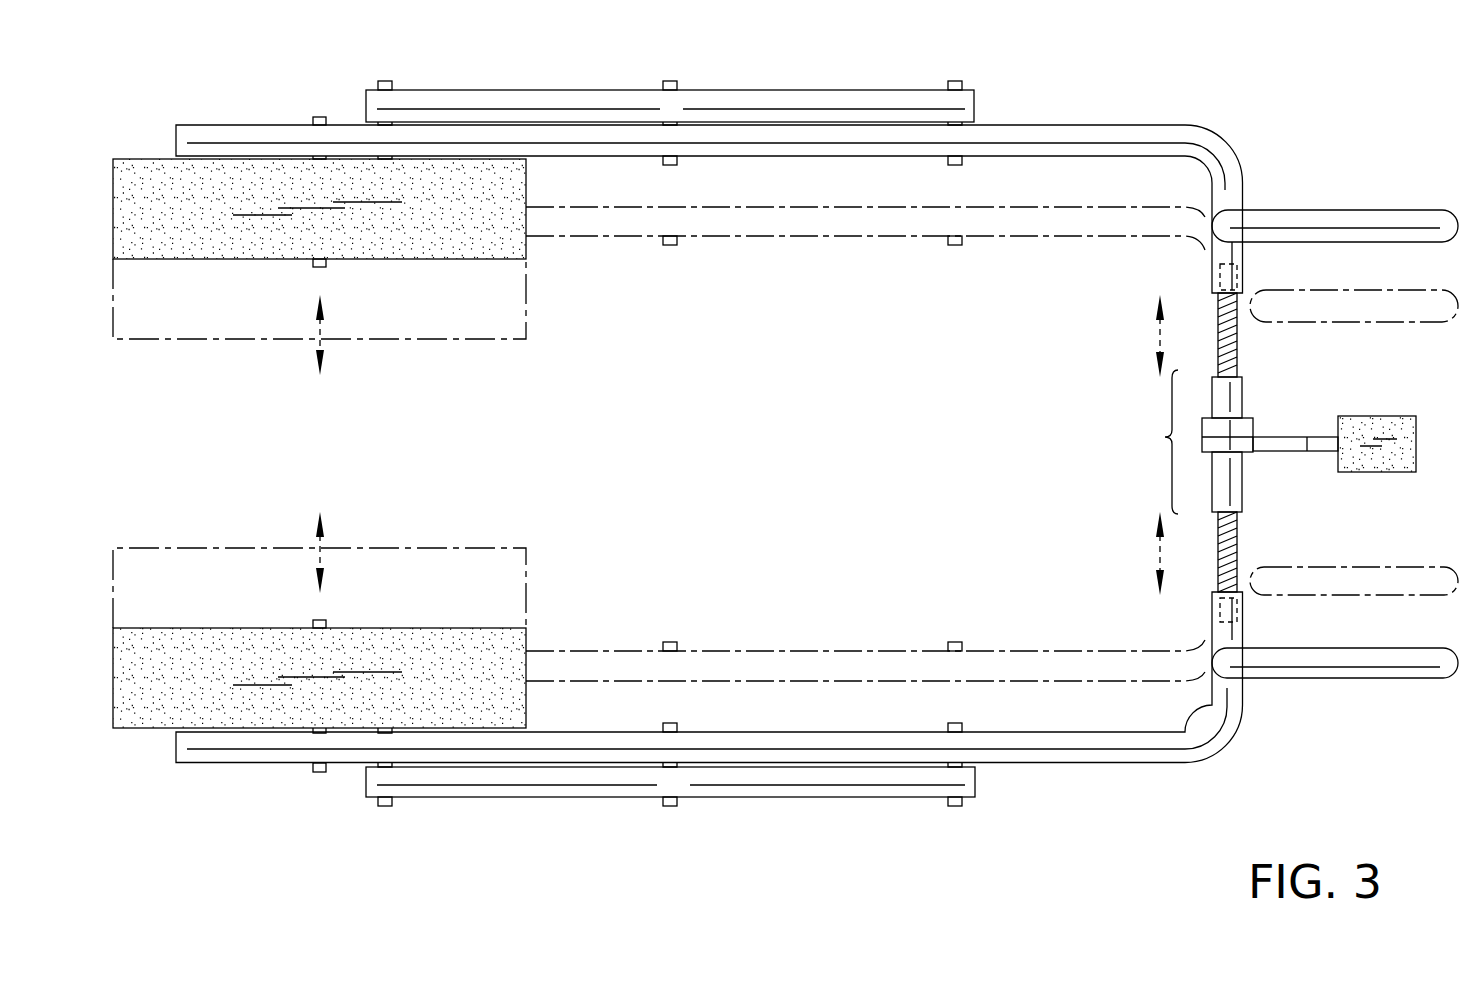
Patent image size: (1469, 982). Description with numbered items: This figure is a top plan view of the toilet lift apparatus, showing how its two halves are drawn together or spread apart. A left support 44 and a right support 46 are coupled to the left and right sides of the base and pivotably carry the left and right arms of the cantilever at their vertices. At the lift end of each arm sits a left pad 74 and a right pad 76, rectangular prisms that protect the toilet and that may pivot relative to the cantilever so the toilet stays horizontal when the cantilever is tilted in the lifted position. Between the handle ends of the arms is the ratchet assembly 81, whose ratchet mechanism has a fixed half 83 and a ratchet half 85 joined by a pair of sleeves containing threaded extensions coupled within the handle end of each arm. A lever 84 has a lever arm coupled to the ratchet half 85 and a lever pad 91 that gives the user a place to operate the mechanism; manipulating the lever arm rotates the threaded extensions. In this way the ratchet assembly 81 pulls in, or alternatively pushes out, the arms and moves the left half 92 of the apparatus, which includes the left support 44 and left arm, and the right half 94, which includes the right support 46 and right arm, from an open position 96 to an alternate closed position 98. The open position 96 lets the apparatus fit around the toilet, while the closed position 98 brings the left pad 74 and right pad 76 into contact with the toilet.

The left support 44 is at (787, 780).
The right support 46 is at (800, 103).
The left pad 74 is at (500, 665).
The right pad 76 is at (500, 223).
The ratchet assembly 81 is at (1219, 442).
The fixed half 83 is at (1247, 425).
The lever 84 is at (1295, 445).
The ratchet half 85 is at (1221, 510).
The lever pad 91 is at (1383, 433).
The left half 92 is at (1238, 758).
The right half 94 is at (1256, 136).
The open position 96 is at (747, 718).
The closed position 98 is at (885, 227).